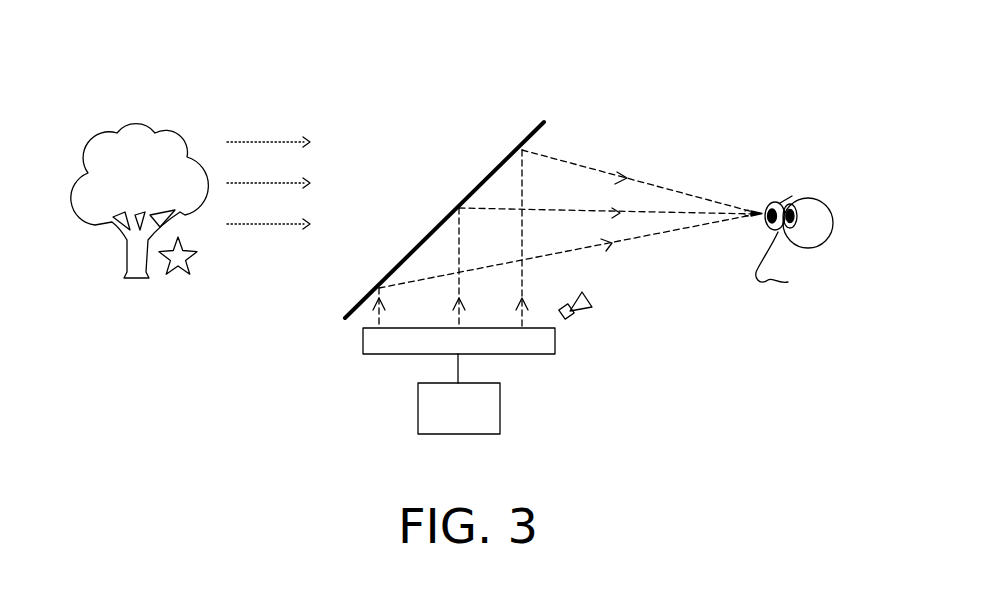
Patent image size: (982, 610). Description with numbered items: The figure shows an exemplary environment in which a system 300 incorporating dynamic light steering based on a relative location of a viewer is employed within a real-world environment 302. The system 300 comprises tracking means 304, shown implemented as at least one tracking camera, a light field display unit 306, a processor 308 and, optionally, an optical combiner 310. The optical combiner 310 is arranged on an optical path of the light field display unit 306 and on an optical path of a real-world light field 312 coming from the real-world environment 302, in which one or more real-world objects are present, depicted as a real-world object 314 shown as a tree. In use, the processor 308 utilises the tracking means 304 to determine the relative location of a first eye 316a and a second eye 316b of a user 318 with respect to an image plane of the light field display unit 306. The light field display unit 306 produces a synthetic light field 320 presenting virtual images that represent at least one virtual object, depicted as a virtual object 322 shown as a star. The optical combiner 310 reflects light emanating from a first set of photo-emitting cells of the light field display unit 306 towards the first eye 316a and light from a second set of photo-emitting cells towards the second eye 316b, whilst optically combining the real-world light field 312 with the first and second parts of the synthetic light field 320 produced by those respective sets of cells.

The system 300 is at (365, 121).
The real-world environment 302 is at (122, 186).
The tracking means 304 is at (625, 310).
The light field display unit 306 is at (515, 346).
The processor 308 is at (482, 423).
The optical combiner 310 is at (444, 220).
The real-world light field 312 is at (290, 220).
The real-world object 314 is at (122, 206).
The first eye 316a is at (785, 178).
The second eye 316b is at (826, 262).
The user 318 is at (823, 223).
The synthetic light field 320 is at (570, 192).
The virtual object 322 is at (173, 298).